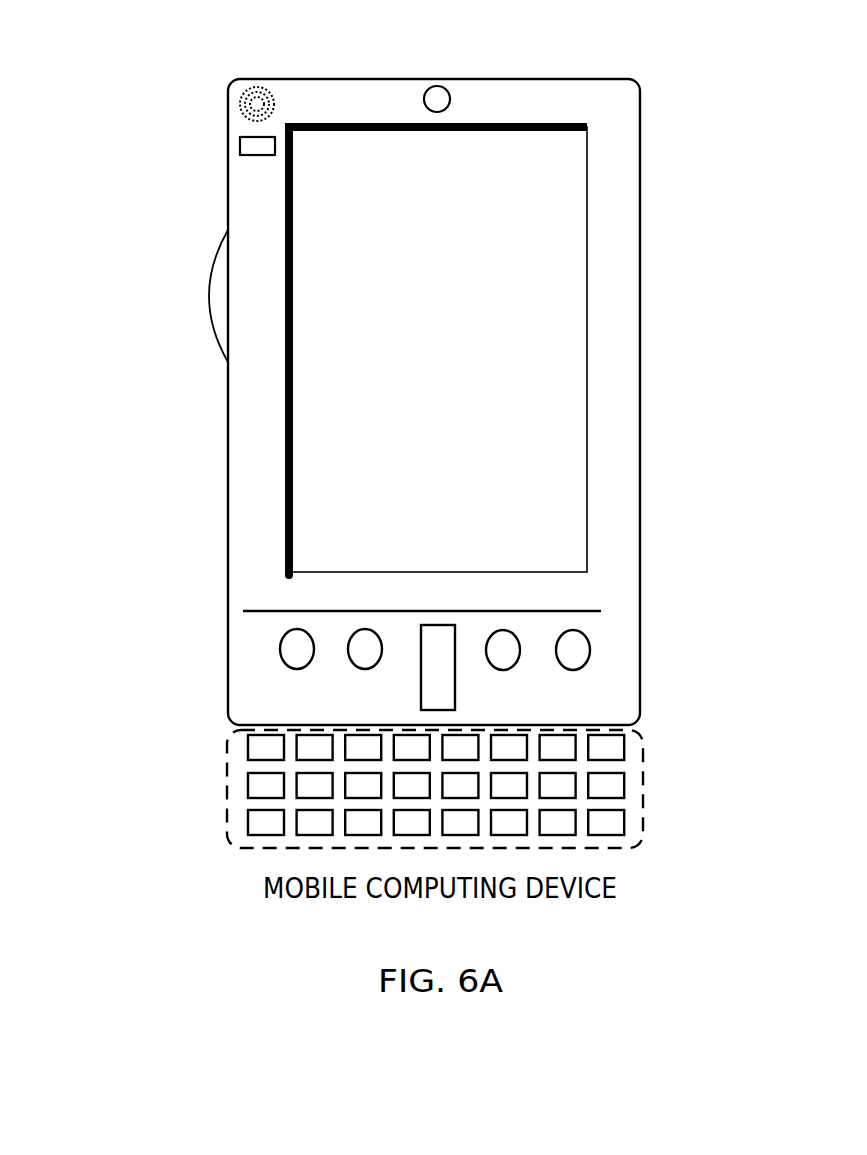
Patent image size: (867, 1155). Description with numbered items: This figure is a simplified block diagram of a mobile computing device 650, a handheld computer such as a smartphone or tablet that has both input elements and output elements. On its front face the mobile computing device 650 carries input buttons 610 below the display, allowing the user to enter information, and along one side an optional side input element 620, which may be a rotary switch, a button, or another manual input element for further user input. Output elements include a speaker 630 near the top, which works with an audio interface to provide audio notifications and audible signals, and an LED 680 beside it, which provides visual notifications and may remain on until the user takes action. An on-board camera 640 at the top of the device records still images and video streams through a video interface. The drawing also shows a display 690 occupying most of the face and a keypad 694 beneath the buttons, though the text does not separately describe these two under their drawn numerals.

The buttons 610 is at (575, 660).
The side button 620 is at (203, 306).
The speaker 630 is at (240, 96).
The camera 640 is at (447, 97).
The mobile computing device housing 650 is at (642, 97).
The sensor 680 is at (240, 137).
The display screen 690 is at (315, 510).
The keyboard 694 is at (225, 817).